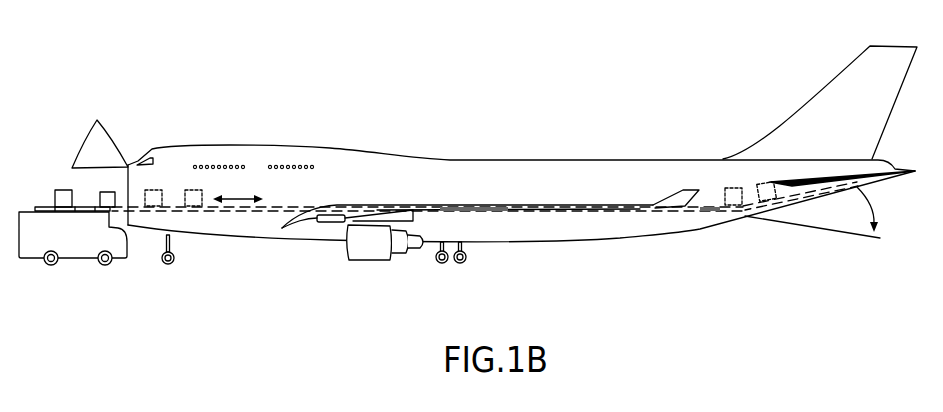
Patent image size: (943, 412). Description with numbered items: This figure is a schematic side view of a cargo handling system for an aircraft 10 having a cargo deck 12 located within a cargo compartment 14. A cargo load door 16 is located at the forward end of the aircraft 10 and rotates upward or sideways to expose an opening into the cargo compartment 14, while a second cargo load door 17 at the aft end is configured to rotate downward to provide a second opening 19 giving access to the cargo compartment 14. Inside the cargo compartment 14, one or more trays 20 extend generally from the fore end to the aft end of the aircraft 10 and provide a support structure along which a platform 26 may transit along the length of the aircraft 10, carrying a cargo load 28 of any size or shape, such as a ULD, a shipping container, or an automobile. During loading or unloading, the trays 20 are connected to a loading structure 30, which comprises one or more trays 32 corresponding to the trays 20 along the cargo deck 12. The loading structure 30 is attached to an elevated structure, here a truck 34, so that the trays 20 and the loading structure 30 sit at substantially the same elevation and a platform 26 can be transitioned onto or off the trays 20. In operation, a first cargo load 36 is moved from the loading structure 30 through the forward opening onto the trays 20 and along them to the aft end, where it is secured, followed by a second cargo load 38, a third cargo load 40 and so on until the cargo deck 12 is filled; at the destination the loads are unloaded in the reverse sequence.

The aircraft 10 is at (172, 70).
The cargo deck 12 is at (193, 211).
The cargo compartment 14 is at (392, 168).
The cargo load door 16 is at (97, 127).
The second cargo load door 17 is at (823, 231).
The second opening 19 is at (878, 200).
The trays 20 is at (234, 222).
The platform 26 is at (53, 206).
The cargo load 28 is at (61, 190).
The loading structure 30 is at (33, 211).
The trays 32 is at (38, 207).
The truck 34 is at (70, 254).
The first cargo load 36 is at (734, 188).
The second cargo load 38 is at (199, 192).
The third cargo load 40 is at (160, 197).